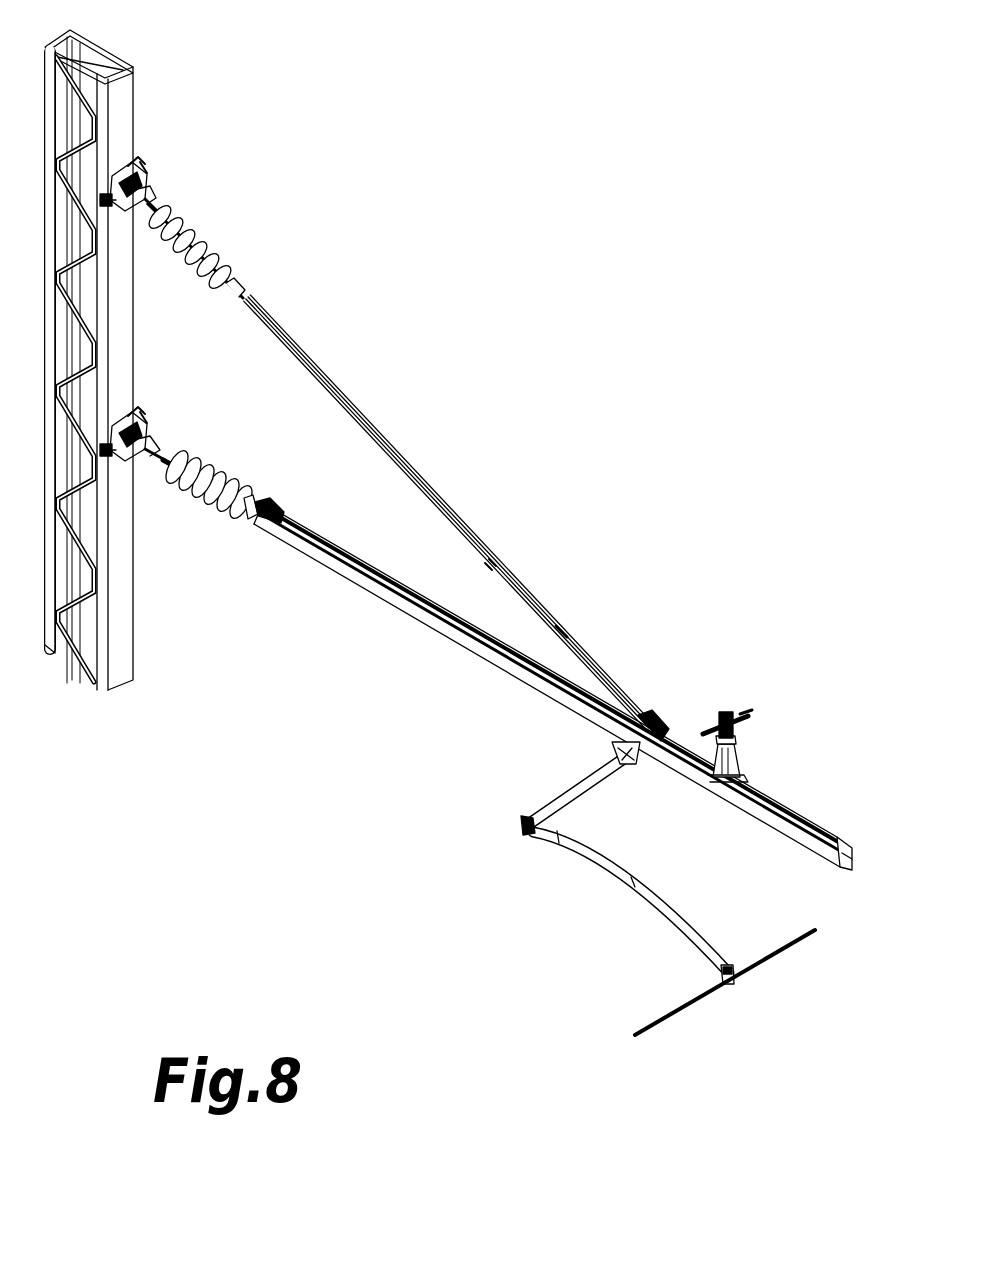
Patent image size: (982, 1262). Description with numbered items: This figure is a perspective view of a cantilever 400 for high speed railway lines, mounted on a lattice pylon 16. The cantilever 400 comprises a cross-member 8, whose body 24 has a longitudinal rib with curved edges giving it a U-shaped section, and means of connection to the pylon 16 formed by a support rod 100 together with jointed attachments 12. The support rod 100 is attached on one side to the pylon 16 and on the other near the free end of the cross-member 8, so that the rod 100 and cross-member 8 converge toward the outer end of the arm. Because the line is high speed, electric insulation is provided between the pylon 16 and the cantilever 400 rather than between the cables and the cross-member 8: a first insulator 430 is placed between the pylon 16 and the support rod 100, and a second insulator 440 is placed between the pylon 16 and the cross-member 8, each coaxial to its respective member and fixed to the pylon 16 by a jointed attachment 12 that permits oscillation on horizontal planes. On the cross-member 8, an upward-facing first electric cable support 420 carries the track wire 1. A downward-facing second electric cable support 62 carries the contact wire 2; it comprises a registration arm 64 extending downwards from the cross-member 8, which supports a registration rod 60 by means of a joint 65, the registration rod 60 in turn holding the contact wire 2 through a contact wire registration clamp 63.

The pylon 16 is at (133, 78).
The attachments 12 is at (167, 155).
The cantilever 400 is at (407, 398).
The first insulator 430 is at (212, 248).
The support rod 100 is at (380, 418).
The second insulator 440 is at (214, 468).
The cross-member 8 is at (553, 686).
The body 24 is at (432, 612).
The track wire 1 is at (740, 714).
The first electric cable support 420 is at (767, 697).
The registration arm 64 is at (560, 775).
The joint 65 is at (520, 829).
The registration rod 60 is at (620, 875).
The second electric cable support 62 is at (537, 901).
The contact wire registration clamp 63 is at (729, 964).
The contact wire 2 is at (664, 1023).